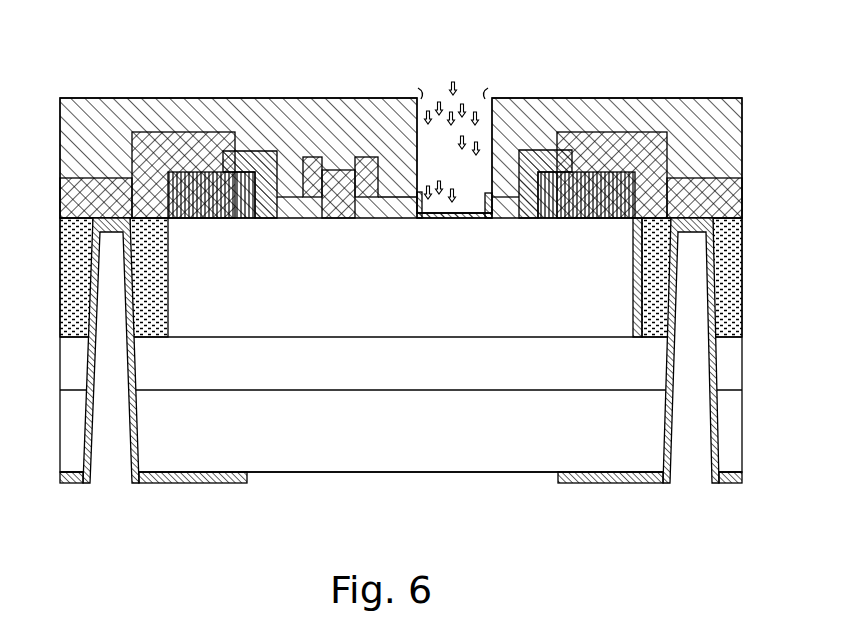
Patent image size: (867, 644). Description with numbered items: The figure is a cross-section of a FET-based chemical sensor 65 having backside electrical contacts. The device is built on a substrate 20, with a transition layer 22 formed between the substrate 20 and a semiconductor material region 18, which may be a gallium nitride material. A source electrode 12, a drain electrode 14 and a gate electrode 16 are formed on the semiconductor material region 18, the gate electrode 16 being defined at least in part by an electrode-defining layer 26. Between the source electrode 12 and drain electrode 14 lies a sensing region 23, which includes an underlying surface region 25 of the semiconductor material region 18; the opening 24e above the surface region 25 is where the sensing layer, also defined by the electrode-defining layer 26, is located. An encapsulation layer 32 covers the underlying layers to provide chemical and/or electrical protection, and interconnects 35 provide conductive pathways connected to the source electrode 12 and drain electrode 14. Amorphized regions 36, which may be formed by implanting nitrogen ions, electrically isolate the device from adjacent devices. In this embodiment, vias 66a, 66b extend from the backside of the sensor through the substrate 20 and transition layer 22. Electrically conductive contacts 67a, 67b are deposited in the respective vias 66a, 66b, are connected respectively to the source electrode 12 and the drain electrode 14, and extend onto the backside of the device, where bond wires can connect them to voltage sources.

The semiconductor device-based sensor 65 is at (714, 79).
The encapsulation layer 32 is at (267, 128).
The interconnects 35 is at (173, 158).
The source electrode 12 is at (186, 206).
The drain electrode 14 is at (594, 206).
The gate electrode 16 is at (338, 194).
The etched opening 24e is at (463, 210).
The surface region 25 is at (446, 240).
The sensing region 23 is at (478, 219).
The electrode-defining layer 26 is at (283, 219).
The amorphized regions 36 is at (139, 286).
The semiconductor material region 18 is at (648, 274).
The transition layer 22 is at (412, 380).
The substrate 20 is at (412, 448).
The via 66a is at (137, 381).
The via 66b is at (666, 382).
The electrically conductive contact 67a is at (247, 477).
The electrically conductive contact 67b is at (558, 477).